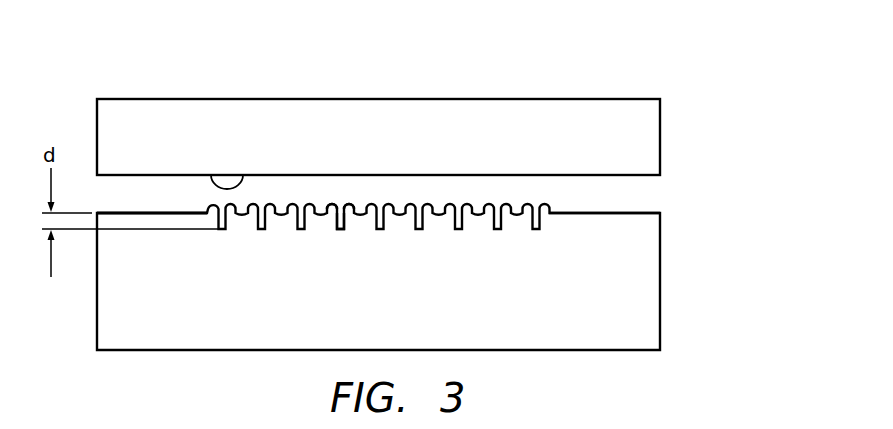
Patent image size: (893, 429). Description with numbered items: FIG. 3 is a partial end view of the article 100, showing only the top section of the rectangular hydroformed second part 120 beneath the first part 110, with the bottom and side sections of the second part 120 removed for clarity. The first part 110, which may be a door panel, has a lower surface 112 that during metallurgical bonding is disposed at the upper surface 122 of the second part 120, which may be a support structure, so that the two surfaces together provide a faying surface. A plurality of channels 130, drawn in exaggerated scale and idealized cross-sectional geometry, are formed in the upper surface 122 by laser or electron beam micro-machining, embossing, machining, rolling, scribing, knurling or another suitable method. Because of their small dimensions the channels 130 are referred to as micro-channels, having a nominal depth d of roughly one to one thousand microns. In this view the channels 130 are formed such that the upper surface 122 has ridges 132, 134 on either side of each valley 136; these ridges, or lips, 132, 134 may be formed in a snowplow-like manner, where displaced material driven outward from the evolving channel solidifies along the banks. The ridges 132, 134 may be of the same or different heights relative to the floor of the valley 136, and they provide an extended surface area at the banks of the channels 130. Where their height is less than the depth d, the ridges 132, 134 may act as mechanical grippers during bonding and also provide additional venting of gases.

The article 100 is at (760, 105).
The first part 110 is at (661, 141).
The lower surface 112 is at (243, 175).
The second part 120 is at (661, 281).
The upper surface 122 is at (158, 212).
The channels 130 is at (535, 211).
The ridge 132 is at (336, 206).
The ridge 134 is at (351, 206).
The valley 136 is at (340, 230).